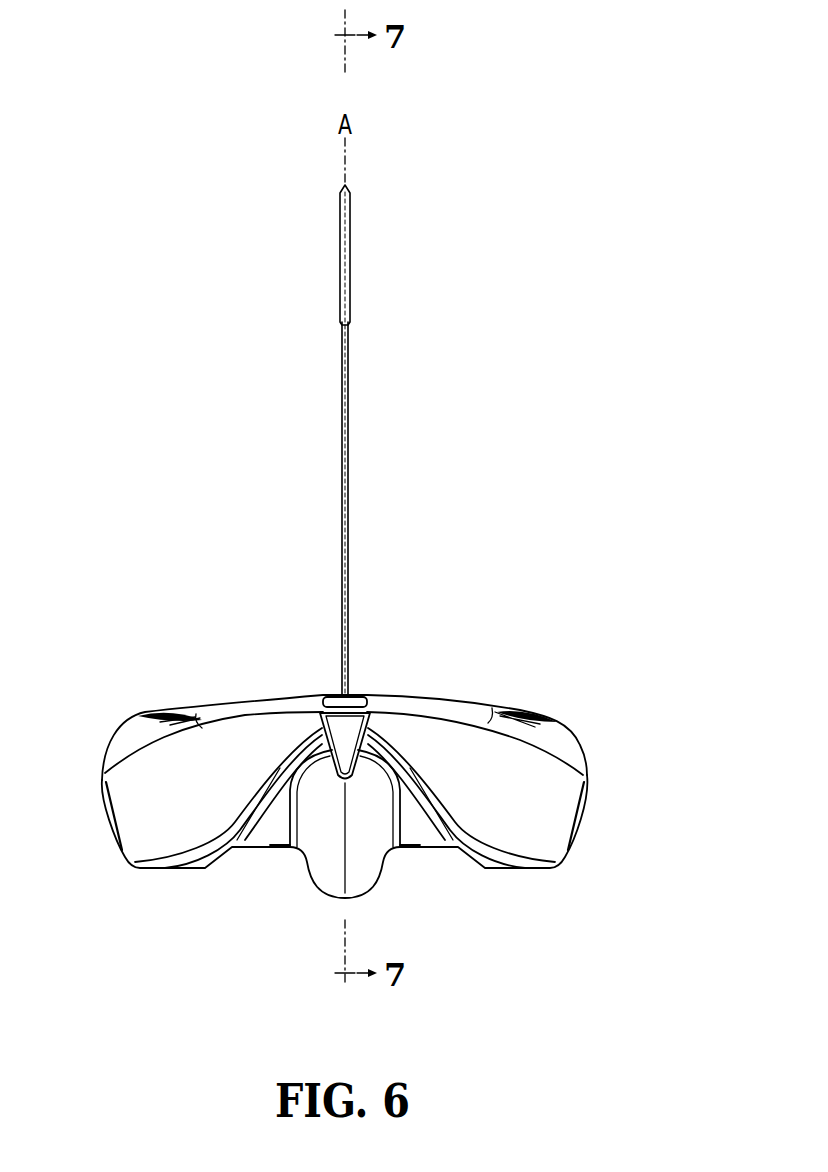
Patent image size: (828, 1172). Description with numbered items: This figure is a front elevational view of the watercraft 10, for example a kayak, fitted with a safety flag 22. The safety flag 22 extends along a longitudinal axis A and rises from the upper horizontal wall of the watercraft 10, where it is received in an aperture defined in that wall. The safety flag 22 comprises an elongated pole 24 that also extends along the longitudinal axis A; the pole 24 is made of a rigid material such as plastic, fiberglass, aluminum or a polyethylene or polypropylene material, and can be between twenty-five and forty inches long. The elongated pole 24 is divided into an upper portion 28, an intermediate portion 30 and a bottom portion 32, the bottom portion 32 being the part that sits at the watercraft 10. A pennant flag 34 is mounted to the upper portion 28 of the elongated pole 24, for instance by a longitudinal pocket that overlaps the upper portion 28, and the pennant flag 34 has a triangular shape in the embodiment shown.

The watercraft 10 is at (125, 488).
The safety flag 22 is at (376, 205).
The elongated pole 24 is at (385, 443).
The upper portion 28 is at (330, 190).
The intermediate portion 30 is at (330, 474).
The bottom portion 32 is at (330, 617).
The pennant flag 34 is at (352, 262).